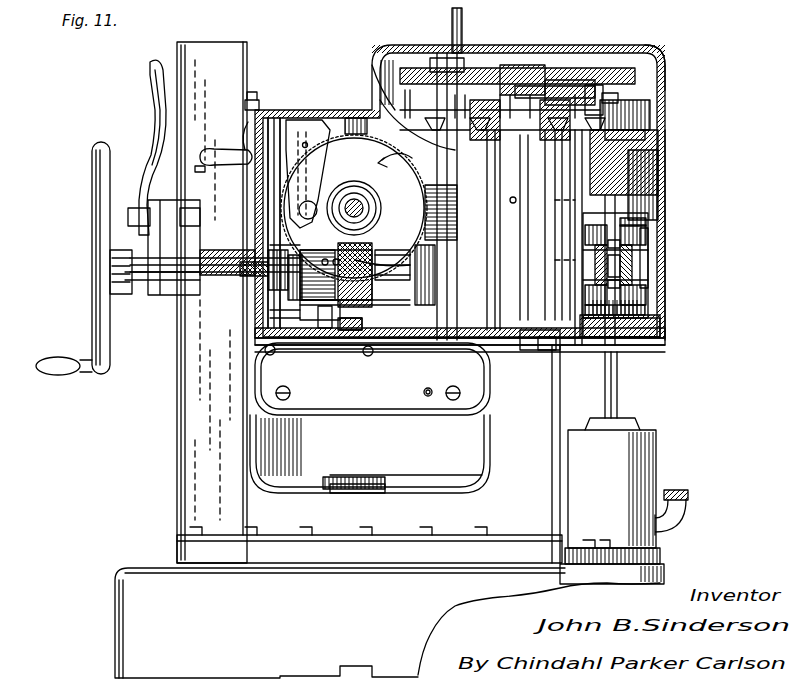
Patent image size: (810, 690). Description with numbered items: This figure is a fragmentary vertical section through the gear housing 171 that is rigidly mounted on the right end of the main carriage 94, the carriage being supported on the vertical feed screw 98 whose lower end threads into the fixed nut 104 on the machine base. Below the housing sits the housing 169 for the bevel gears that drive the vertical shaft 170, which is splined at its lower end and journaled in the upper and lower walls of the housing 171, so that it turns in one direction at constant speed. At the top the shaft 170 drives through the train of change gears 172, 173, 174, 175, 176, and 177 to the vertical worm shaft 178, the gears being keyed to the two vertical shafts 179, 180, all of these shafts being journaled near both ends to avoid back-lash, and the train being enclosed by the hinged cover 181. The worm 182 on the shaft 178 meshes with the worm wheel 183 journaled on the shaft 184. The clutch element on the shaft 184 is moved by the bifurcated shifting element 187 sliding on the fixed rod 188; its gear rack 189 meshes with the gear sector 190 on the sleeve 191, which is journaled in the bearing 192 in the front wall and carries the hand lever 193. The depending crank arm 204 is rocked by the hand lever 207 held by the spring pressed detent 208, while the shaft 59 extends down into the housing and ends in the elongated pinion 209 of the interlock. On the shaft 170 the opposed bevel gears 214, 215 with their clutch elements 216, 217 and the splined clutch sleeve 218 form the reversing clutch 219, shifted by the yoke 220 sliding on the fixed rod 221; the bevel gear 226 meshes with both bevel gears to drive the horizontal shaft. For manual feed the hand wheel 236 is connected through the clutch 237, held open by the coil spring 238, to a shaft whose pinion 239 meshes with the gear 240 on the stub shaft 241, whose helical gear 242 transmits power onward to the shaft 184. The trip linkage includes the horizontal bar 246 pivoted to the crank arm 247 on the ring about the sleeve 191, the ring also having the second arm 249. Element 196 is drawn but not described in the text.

The shaft 59 is at (452, 22).
The main carriage 94 is at (315, 462).
The vertical feed screw 98 is at (365, 476).
The fixed nut 104 is at (358, 494).
The housing 169 is at (657, 464).
The vertical shaft 170 is at (620, 386).
The gear housing 171 is at (667, 173).
The change gear 172 is at (650, 105).
The change gear 173 is at (605, 100).
The change gear 174 is at (592, 90).
The change gear 175 is at (540, 95).
The change gear 176 is at (528, 72).
The change gear 177 is at (460, 70).
The vertical worm shaft 178 is at (440, 88).
The vertical shaft 179 is at (568, 195).
The vertical shaft 180 is at (523, 205).
The hinged cover 181 is at (667, 75).
The worm 182 is at (460, 225).
The worm wheel 183 is at (343, 145).
The shaft 184 is at (362, 205).
The bifurcated shifting element 187 is at (378, 166).
The fixed rod 188 is at (268, 220).
The gear rack 189 is at (280, 235).
The gear sector 190 is at (260, 272).
The sleeve 191 is at (300, 310).
The bearing 192 is at (215, 288).
The hand lever 193 is at (153, 98).
The stop 196 is at (367, 120).
The crank arm 204 is at (240, 170).
The hand lever 207 is at (225, 150).
The spring pressed detent 208 is at (252, 115).
The elongated pinion 209 is at (515, 200).
The bevel gear 214 is at (655, 222).
The bevel gear 215 is at (628, 300).
The clutch element 216 is at (625, 243).
The clutch element 217 is at (632, 285).
The clutch sleeve 218 is at (635, 265).
The reversing clutch 219 is at (650, 235).
The yoke 220 is at (645, 218).
The fixed rod 221 is at (660, 333).
The bevel gear 226 is at (540, 338).
The hand wheel 236 is at (92, 180).
The clutch 237 is at (116, 281).
The coil spring 238 is at (122, 210).
The pinion 239 is at (262, 290).
The gear 240 is at (285, 325).
The stub shaft 241 is at (326, 322).
The helical gear 242 is at (350, 325).
The horizontal bar 246 is at (175, 215).
The crank arm 247 is at (198, 225).
The arm 249 is at (190, 268).